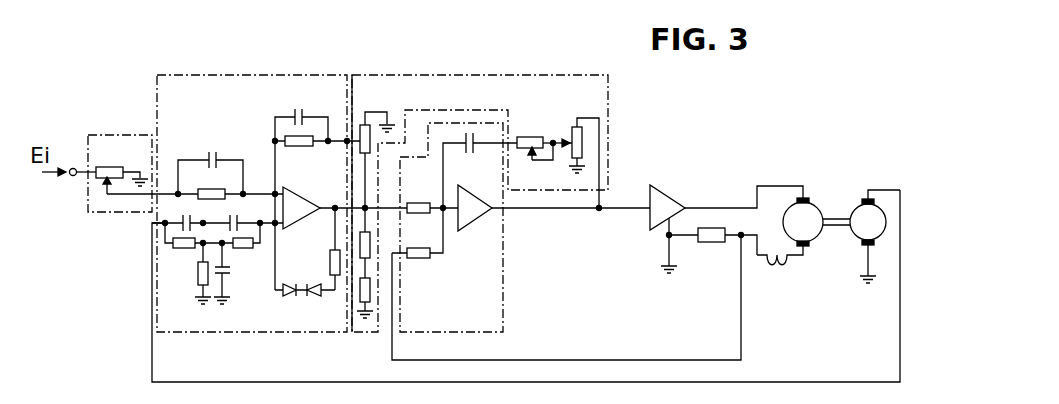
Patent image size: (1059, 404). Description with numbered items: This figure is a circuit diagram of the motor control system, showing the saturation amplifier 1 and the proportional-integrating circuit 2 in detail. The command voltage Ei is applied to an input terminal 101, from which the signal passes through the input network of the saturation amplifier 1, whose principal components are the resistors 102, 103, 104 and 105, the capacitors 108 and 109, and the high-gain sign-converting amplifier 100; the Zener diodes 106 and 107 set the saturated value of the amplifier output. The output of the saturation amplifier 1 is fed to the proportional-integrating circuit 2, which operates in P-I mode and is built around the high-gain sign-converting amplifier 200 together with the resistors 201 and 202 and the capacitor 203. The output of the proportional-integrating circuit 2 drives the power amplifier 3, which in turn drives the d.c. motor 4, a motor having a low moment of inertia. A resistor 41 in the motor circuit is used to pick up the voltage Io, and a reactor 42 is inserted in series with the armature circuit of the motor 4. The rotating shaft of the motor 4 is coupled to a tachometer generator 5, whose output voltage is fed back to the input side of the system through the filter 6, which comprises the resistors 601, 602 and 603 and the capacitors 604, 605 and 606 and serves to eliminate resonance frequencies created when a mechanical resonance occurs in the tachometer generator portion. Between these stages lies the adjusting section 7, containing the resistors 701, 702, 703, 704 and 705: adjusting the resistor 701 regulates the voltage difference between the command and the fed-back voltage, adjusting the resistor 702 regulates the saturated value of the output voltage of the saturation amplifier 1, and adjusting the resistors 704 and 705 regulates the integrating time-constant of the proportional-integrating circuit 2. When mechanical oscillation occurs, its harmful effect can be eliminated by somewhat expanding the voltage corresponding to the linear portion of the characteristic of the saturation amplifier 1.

The saturation amplifier 1 is at (275, 158).
The input terminal 101 is at (70, 178).
The resistor 102 is at (126, 161).
The resistor 103 is at (204, 188).
The resistor 104 is at (297, 135).
The resistor 105 is at (330, 258).
The Zener diode 106 is at (290, 298).
The Zener diode 107 is at (318, 298).
The capacitor 108 is at (213, 151).
The capacitor 109 is at (300, 110).
The high-gain sign-converting amplifier 100 is at (321, 204).
The capacitor 605 is at (302, 226).
The filter 6 is at (232, 217).
The resistor 601 is at (176, 248).
The resistor 602 is at (246, 250).
The resistor 603 is at (197, 284).
The capacitor 604 is at (180, 213).
The capacitor 606 is at (218, 283).
The adjusting section 7 is at (480, 184).
The resistor 701 is at (363, 124).
The resistor 702 is at (372, 247).
The resistor 703 is at (372, 300).
The resistor 704 is at (531, 136).
The resistor 705 is at (576, 126).
The proportional-integrating circuit 2 is at (507, 227).
The high-gain sign-converting amplifier 200 is at (476, 222).
The resistor 201 is at (419, 203).
The resistor 202 is at (418, 258).
The capacitor 203 is at (470, 153).
The power amplifier 3 is at (667, 194).
The d.c. motor 4 is at (812, 206).
The resistor 41 is at (711, 243).
The reactor 42 is at (777, 266).
The tachometer generator 5 is at (852, 238).